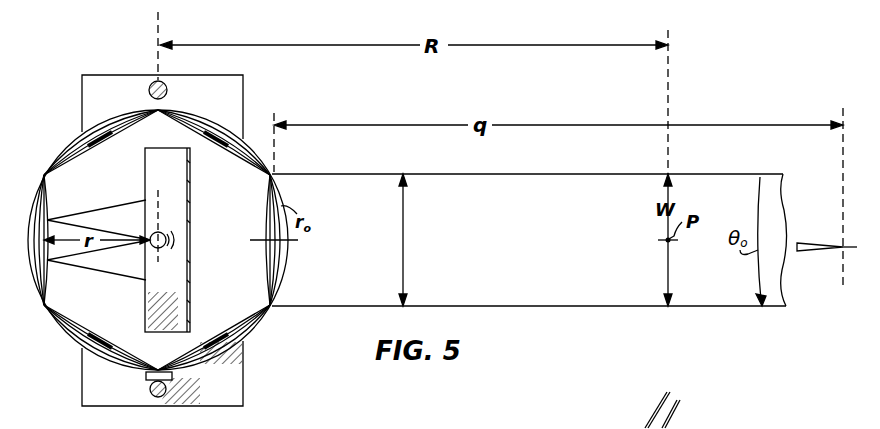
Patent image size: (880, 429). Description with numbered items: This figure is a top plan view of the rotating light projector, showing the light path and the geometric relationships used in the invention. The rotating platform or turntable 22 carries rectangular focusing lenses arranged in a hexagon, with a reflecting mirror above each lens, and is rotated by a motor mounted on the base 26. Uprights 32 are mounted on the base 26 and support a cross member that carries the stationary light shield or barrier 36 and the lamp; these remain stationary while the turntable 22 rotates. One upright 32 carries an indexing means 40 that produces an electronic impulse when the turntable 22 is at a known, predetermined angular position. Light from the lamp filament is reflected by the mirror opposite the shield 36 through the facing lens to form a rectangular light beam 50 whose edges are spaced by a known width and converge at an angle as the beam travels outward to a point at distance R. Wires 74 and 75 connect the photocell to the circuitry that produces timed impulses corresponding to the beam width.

The rotating platform or turntable 22 is at (58, 151).
The upright 32 is at (168, 92).
The light shield or barrier 36 is at (146, 184).
The base 26 is at (232, 378).
The indexing means 40 is at (156, 395).
The rectangular light beam 50 is at (621, 254).
The wire 74 is at (643, 426).
The wire 75 is at (684, 426).